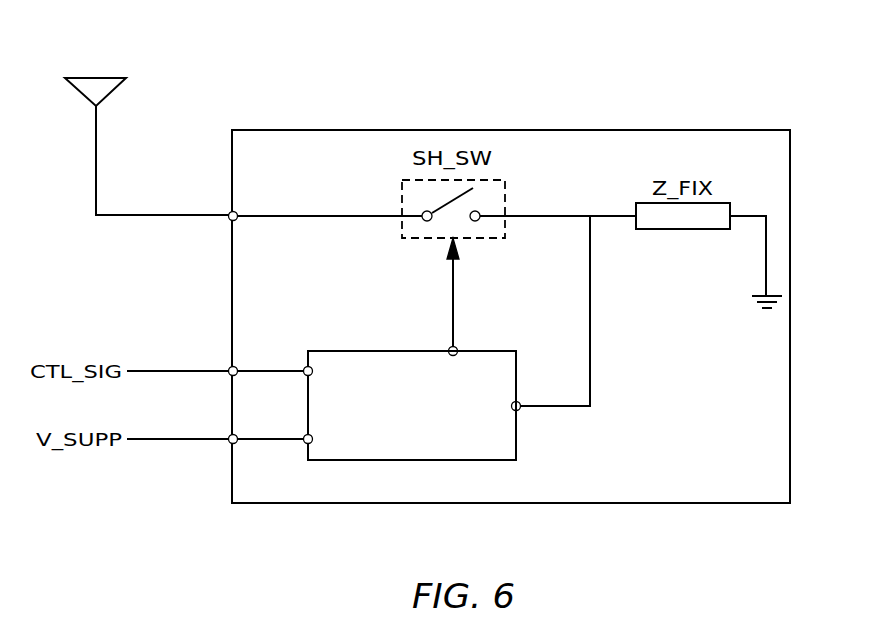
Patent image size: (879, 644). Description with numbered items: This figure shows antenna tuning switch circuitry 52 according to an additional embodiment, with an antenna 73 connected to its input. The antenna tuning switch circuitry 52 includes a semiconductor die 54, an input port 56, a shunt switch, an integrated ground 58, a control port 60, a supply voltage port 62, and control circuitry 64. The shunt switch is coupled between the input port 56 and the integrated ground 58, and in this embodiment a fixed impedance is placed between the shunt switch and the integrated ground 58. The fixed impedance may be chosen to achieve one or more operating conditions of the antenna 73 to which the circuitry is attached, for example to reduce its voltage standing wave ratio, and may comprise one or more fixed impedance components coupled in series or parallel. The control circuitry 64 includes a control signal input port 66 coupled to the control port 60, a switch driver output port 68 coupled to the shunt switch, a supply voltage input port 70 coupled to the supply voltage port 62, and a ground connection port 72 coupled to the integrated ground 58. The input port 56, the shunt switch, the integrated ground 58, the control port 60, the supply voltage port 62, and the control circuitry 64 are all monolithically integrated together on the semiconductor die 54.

The antenna tuning switch circuitry 52 is at (517, 60).
The semiconductor die 54 is at (758, 130).
The input port 56 is at (228, 221).
The integrated ground 58 is at (757, 305).
The control port 60 is at (228, 376).
The supply voltage port 62 is at (228, 444).
The control circuitry 64 is at (506, 452).
The control signal input port 66 is at (304, 368).
The switch driver output port 68 is at (451, 348).
The supply voltage input port 70 is at (304, 443).
The ground connection port 72 is at (520, 411).
The antenna 73 is at (93, 78).